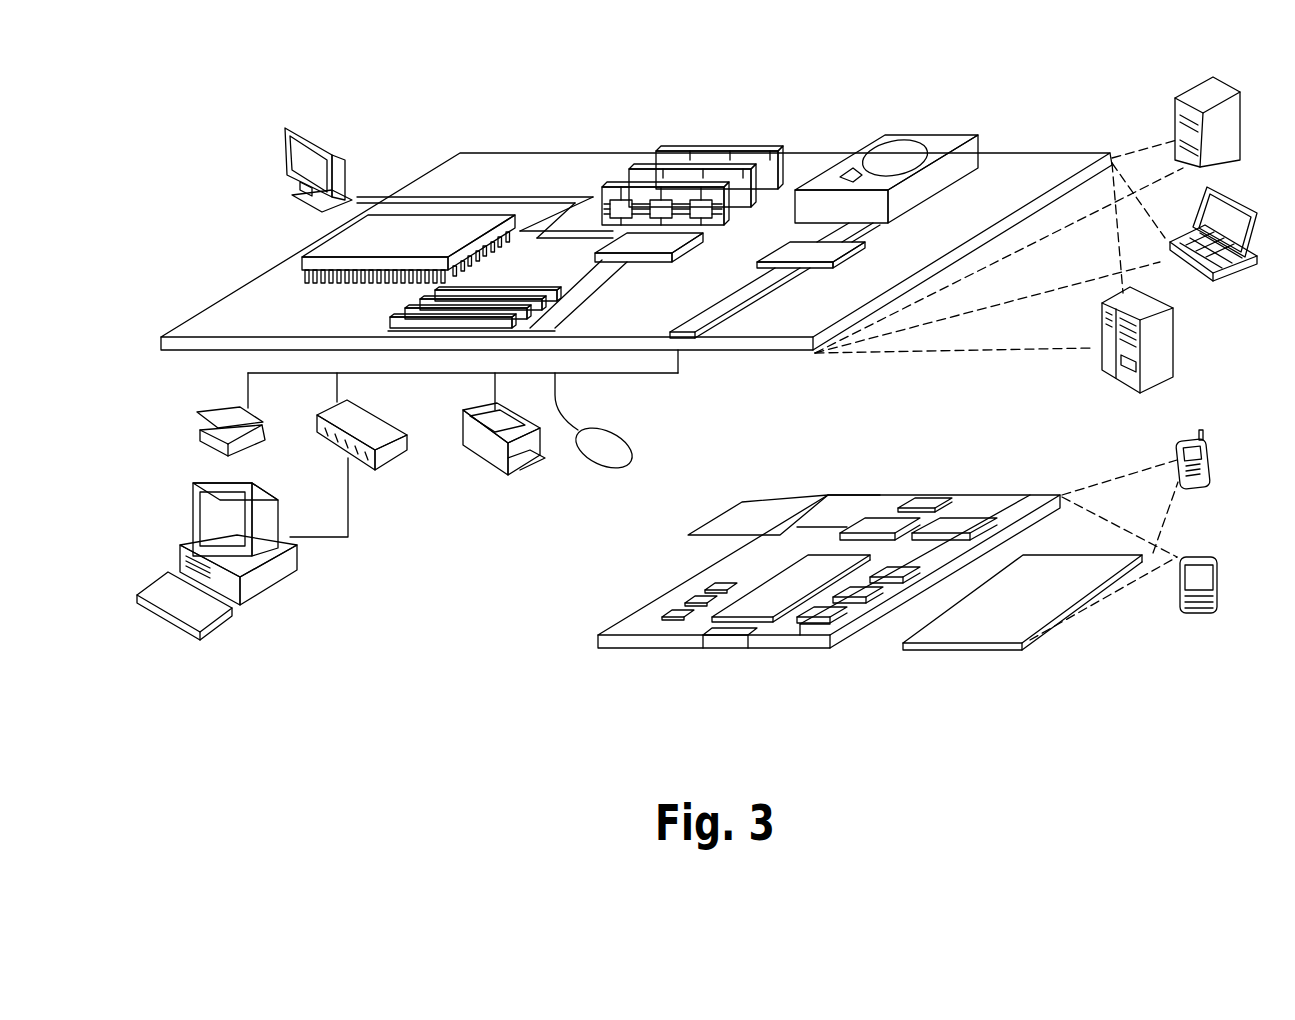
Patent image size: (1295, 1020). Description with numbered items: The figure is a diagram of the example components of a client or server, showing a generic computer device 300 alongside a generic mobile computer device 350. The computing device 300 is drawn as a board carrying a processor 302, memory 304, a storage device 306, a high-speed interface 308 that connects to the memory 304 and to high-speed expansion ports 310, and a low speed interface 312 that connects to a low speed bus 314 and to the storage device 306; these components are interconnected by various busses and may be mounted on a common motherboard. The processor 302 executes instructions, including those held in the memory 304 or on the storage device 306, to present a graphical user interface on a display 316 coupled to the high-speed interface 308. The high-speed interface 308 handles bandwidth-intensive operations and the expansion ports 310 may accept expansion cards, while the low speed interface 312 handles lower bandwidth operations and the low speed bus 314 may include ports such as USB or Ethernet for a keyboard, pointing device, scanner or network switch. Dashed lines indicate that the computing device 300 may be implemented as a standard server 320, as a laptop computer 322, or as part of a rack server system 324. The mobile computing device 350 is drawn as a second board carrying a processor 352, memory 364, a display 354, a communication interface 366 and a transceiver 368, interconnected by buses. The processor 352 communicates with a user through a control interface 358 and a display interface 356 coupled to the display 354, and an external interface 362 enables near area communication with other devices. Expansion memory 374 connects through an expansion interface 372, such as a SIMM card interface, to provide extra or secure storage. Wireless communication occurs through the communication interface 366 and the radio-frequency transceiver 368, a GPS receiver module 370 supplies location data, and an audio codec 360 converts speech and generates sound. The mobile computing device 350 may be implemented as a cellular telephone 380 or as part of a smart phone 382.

The generic computer device 300 is at (417, 85).
The processor 302 is at (318, 242).
The memory 304 is at (705, 145).
The storage device 306 is at (888, 135).
The high-speed interface 308 is at (652, 263).
The high-speed expansion ports 310 is at (390, 316).
The low speed interface 312 is at (790, 243).
The low speed bus 314 is at (684, 330).
The display 316 is at (292, 128).
The standard server 320 is at (1180, 95).
The laptop computer 322 is at (1243, 258).
The rack server system 324 is at (1173, 340).
The generic mobile computer device 350 is at (556, 669).
The processor 352 is at (778, 581).
The display 354 is at (1080, 553).
The display interface 356 is at (838, 620).
The control interface 358 is at (867, 600).
The audio codec 360 is at (918, 568).
The external interface 362 is at (727, 650).
The memory 364 is at (672, 607).
The communication interface 366 is at (873, 515).
The transceiver 368 is at (958, 520).
The GPS receiver module 370 is at (922, 497).
The expansion interface 372 is at (828, 506).
The expansion memory 374 is at (745, 506).
The cellular telephone 380 is at (1188, 442).
The smart phone 382 is at (1207, 556).